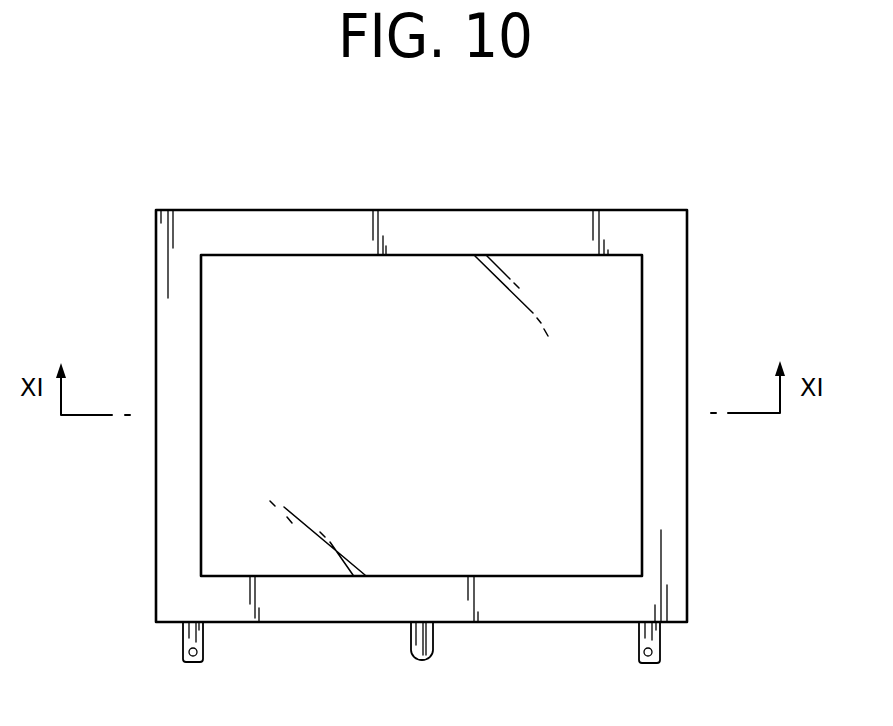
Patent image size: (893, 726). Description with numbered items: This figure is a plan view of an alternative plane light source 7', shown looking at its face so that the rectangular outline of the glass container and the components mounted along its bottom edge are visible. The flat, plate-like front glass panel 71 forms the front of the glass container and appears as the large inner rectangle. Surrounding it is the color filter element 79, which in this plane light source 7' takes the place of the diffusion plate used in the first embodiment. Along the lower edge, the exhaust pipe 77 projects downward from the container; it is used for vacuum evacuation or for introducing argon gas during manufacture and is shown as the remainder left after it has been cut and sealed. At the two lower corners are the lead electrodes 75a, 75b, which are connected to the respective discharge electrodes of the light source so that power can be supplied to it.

The plane light source 7' is at (438, 421).
The front glass panel 71 is at (292, 278).
The color filter element 79 is at (453, 222).
The lead electrode 75a is at (650, 637).
The lead electrode 75b is at (185, 635).
The exhaust pipe 77 is at (416, 648).